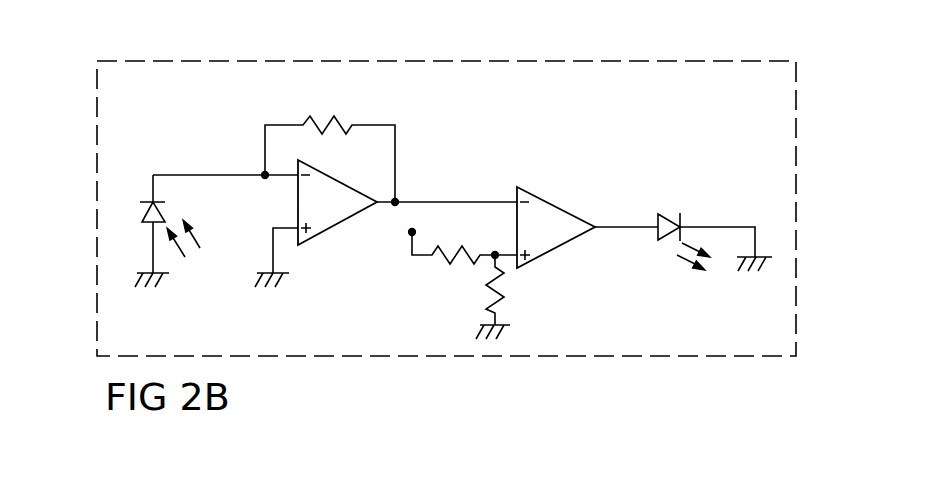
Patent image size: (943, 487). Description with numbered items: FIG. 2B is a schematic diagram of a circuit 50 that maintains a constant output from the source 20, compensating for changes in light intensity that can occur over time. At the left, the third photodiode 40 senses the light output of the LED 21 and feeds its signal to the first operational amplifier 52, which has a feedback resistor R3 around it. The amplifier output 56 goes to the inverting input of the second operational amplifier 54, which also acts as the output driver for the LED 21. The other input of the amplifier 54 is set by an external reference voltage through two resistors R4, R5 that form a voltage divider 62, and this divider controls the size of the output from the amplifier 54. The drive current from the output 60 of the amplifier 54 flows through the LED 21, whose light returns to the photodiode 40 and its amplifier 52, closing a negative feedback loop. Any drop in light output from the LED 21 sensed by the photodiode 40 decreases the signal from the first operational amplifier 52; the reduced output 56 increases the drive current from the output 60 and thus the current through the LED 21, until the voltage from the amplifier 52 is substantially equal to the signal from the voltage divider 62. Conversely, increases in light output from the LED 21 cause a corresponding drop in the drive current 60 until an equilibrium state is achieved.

The circuit 50 is at (648, 60).
The third photodiode 40 is at (146, 140).
The feedback resistor R3 is at (330, 146).
The first operational amplifier 52 is at (323, 232).
The output 56 is at (480, 202).
The voltage divider 62 is at (452, 272).
The resistor R4 is at (464, 241).
The resistor R5 is at (506, 297).
The operational amplifier 54 is at (565, 245).
The output 60 is at (620, 227).
The LED 21 is at (677, 215).
The source 20 is at (724, 202).